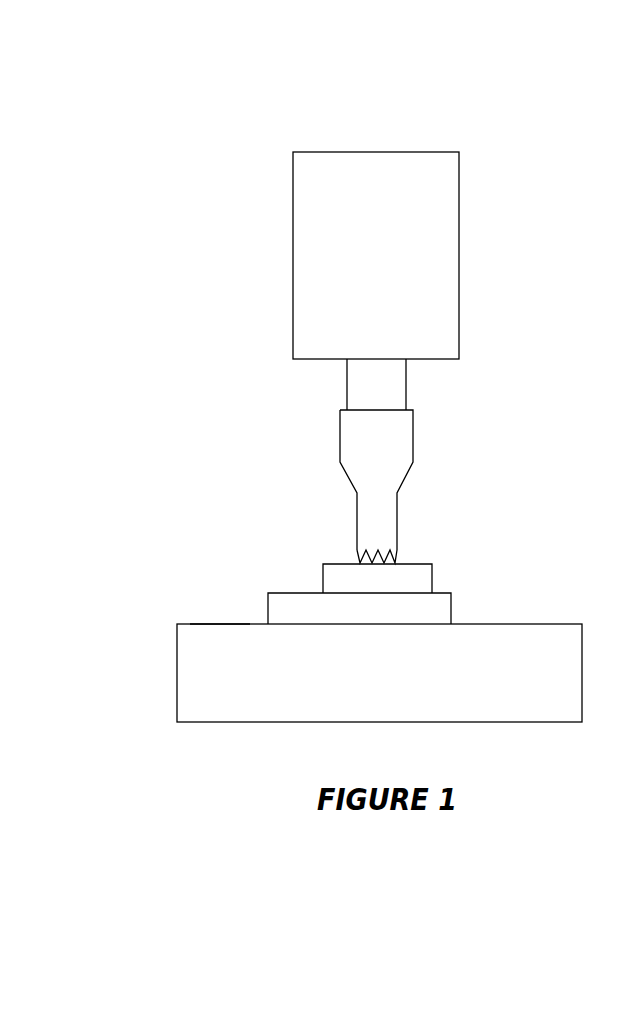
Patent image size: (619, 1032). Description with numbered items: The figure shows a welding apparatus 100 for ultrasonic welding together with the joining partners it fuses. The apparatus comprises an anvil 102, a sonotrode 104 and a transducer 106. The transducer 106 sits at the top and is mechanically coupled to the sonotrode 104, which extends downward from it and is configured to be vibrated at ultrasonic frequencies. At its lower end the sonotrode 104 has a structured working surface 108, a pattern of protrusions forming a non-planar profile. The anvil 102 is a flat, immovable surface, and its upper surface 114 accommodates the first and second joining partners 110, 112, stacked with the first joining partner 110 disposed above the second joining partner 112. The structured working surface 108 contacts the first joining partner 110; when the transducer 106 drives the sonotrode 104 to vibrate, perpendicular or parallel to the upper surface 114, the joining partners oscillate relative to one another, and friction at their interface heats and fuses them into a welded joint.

The welding apparatus 100 is at (212, 120).
The anvil 102 is at (177, 624).
The sonotrode 104 is at (413, 452).
The transducer 106 is at (459, 215).
The structured working surface 108 is at (352, 543).
The first joining partner 110 is at (427, 564).
The second joining partner 112 is at (451, 593).
The upper surface 114 is at (221, 624).